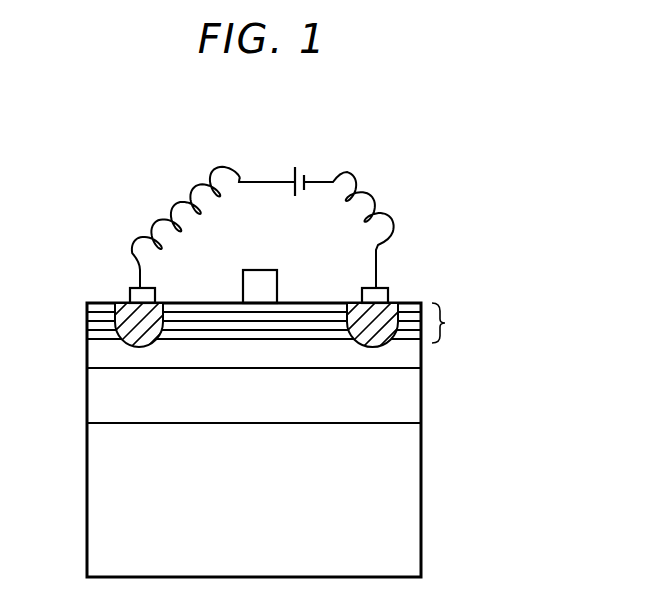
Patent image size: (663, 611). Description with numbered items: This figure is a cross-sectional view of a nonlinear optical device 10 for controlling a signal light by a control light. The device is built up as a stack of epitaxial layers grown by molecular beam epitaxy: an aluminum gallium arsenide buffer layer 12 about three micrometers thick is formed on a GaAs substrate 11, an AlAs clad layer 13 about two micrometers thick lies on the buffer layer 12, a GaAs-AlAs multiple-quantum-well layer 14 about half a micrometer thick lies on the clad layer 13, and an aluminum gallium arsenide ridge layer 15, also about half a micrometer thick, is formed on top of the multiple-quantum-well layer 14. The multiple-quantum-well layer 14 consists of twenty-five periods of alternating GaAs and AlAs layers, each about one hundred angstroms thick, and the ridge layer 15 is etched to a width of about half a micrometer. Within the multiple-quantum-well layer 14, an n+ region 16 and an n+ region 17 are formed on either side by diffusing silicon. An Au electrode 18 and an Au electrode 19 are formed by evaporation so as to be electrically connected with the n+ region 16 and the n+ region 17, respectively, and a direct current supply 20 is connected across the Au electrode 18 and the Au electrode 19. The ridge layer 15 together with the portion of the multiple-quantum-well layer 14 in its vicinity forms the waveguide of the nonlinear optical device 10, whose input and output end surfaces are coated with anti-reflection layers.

The nonlinear optical device 10 is at (263, 407).
The GaAs substrate 11 is at (413, 493).
The buffer layer 12 is at (412, 398).
The clad layer 13 is at (413, 355).
The multiple-quantum-well layer 14 is at (447, 321).
The ridge layer 15 is at (263, 270).
The n+ region 16 is at (397, 299).
The n+ region 17 is at (117, 300).
The Au electrode 18 is at (128, 297).
The Au electrode 19 is at (383, 287).
The direct current supply 20 is at (306, 166).